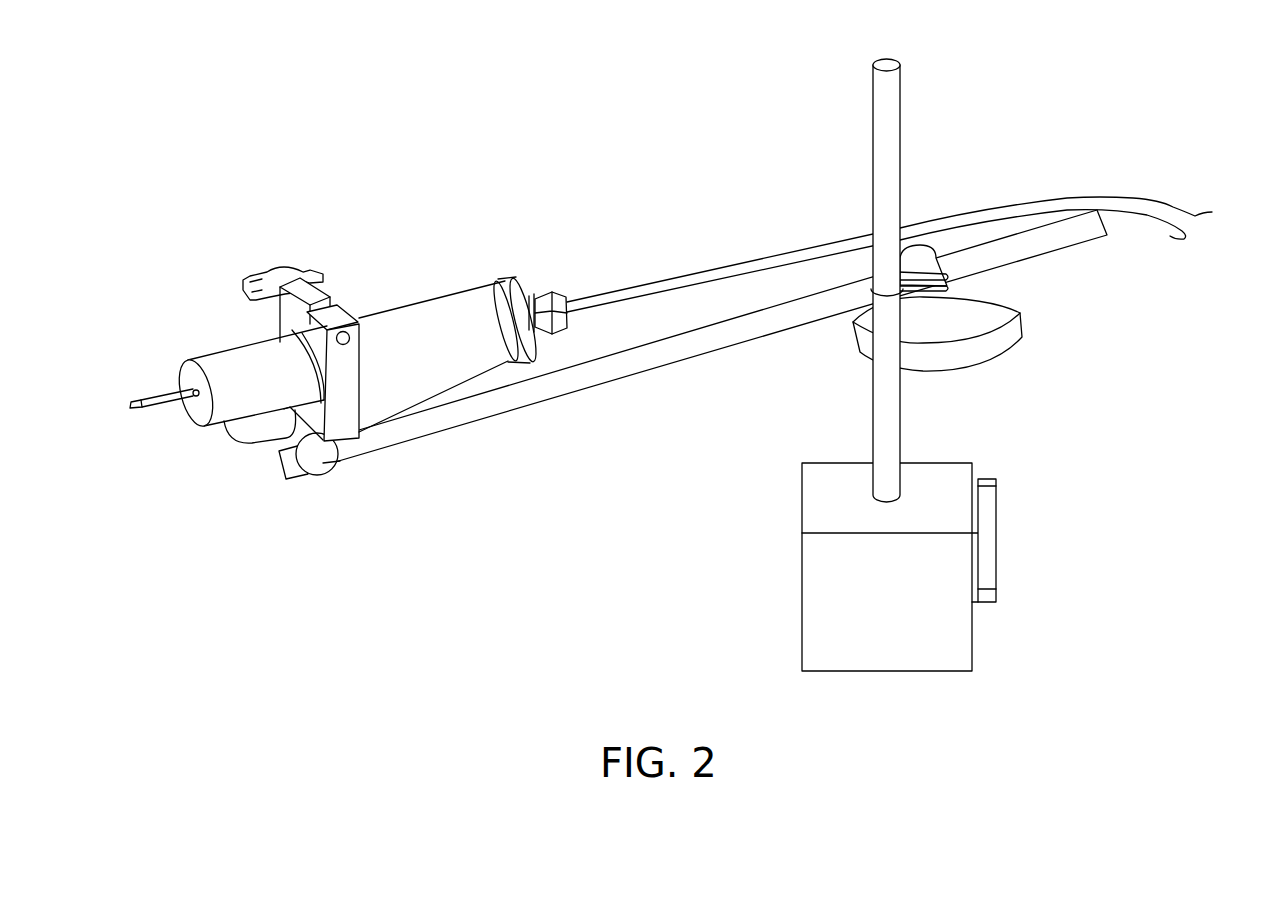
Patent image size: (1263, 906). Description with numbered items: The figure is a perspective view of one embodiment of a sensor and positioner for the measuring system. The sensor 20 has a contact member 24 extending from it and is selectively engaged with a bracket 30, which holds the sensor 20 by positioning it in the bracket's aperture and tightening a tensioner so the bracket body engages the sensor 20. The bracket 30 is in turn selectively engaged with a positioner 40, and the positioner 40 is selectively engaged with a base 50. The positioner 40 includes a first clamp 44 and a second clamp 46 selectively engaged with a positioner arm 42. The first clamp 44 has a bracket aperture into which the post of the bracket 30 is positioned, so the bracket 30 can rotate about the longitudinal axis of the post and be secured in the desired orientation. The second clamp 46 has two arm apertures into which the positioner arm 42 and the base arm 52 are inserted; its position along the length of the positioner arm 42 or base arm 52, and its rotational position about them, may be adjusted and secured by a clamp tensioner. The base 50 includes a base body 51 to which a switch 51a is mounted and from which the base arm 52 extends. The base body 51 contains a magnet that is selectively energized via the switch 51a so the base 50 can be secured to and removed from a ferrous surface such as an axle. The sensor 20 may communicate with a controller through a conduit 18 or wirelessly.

The conduit 18 is at (1143, 202).
The sensor 20 is at (440, 246).
The contact member 24 is at (163, 392).
The bracket 30 is at (307, 293).
The positioner 40 is at (600, 446).
The positioner arm 42 is at (717, 338).
The first clamp 44 is at (314, 458).
The second clamp 46 is at (925, 262).
The base 50 is at (1032, 618).
The base body 51 is at (898, 609).
The switch 51a is at (996, 512).
The base arm 52 is at (893, 130).